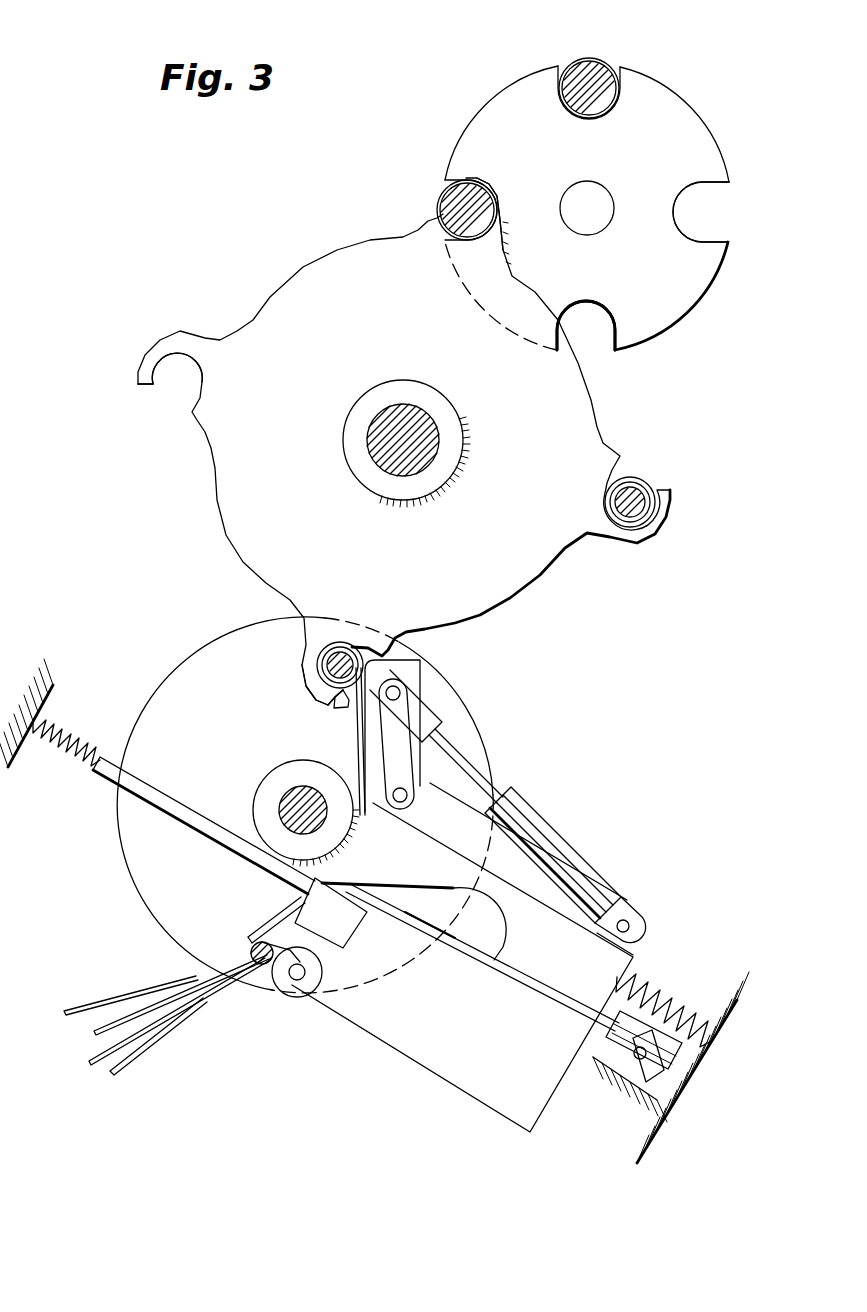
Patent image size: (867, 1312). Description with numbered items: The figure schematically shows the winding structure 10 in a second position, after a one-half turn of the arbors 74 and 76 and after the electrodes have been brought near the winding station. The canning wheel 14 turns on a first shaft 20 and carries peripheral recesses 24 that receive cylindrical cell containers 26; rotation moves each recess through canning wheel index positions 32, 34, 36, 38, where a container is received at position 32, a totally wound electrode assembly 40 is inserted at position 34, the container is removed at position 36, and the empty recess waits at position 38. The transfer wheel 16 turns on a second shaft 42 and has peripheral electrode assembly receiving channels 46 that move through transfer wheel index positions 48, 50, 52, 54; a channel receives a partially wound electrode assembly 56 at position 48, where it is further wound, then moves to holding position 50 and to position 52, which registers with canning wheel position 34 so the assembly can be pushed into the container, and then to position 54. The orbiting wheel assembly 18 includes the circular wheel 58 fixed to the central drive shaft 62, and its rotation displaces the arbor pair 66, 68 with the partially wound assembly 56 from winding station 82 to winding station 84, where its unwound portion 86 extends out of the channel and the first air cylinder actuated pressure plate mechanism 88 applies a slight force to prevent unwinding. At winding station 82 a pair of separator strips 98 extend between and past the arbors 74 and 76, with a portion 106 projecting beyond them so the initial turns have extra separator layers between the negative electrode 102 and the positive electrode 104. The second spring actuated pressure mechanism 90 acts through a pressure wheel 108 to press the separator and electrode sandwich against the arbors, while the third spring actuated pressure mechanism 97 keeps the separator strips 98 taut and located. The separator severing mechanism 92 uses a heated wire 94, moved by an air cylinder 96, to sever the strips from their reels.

The structure 10 is at (198, 177).
The canning wheel 14 is at (574, 211).
The transfer wheel 16 is at (419, 457).
The orbiting wheel assembly 18 is at (303, 805).
The first shaft 20 is at (599, 194).
The recesses 24 is at (612, 64).
The cell container 26 is at (594, 60).
The canning wheel index position 32 is at (571, 64).
The canning wheel index position 34 is at (438, 212).
The canning wheel index position 36 is at (592, 350).
The canning wheel index position 38 is at (732, 198).
The totally wound electrode assembly 40 is at (638, 488).
The second shaft 42 is at (378, 458).
The electrode assembly receiving channels 46 is at (170, 382).
The transfer wheel index position 48 is at (292, 694).
The transfer wheel index position 50 is at (668, 480).
The transfer wheel index position 52 is at (424, 190).
The transfer wheel index position 54 is at (176, 396).
The partially wound electrode assembly 56 is at (338, 708).
The wheel 58 is at (210, 662).
The central drive shaft 62 is at (288, 802).
The arbor 66 is at (326, 668).
The arbor 68 is at (326, 652).
The arbor 74 is at (250, 956).
The arbor 76 is at (272, 952).
The winding station 82 is at (242, 941).
The winding station 84 is at (260, 692).
The unwound portion 86 is at (357, 746).
The first air cylinder actuated pressure plate mechanism 88 is at (582, 856).
The second spring actuated pressure mechanism 90 is at (628, 960).
The separator severing mechanism 92 is at (518, 984).
The heated wire 94 is at (382, 916).
The air cylinder 96 is at (606, 1060).
The third spring actuated pressure mechanism 97 is at (160, 788).
The separator strips 98 is at (94, 1034).
The negative electrode 102 is at (92, 1068).
The positive electrode 104 is at (90, 1002).
The portion 106 is at (284, 906).
The pressure wheel 108 is at (278, 996).